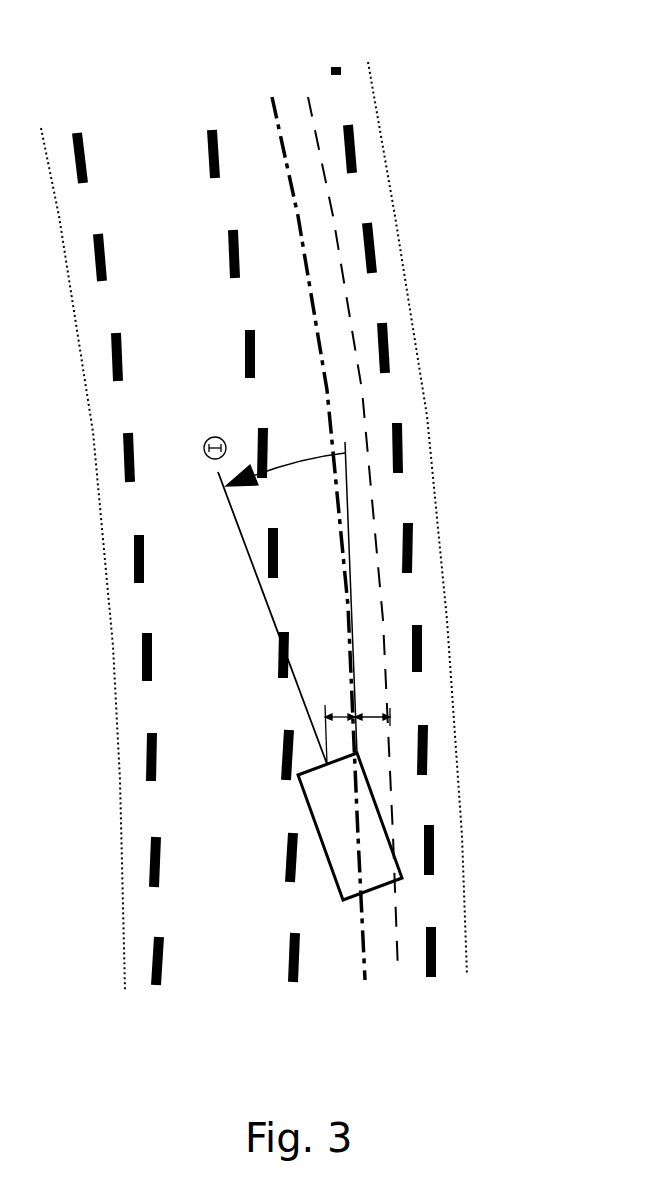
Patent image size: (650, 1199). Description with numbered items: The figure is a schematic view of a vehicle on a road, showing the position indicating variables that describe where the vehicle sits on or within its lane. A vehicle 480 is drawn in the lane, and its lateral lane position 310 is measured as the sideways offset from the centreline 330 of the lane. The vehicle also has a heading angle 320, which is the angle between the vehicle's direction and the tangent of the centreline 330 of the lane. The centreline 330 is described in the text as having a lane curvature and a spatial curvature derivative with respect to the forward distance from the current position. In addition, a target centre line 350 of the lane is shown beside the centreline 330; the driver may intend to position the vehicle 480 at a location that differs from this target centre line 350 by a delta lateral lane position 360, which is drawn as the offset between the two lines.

The centreline 330 is at (272, 92).
The target centre line 350 is at (363, 403).
The heading angle 320 is at (269, 445).
The lateral lane position 310 is at (343, 712).
The delta lateral lane position 360 is at (375, 708).
The vehicle 480 is at (343, 887).